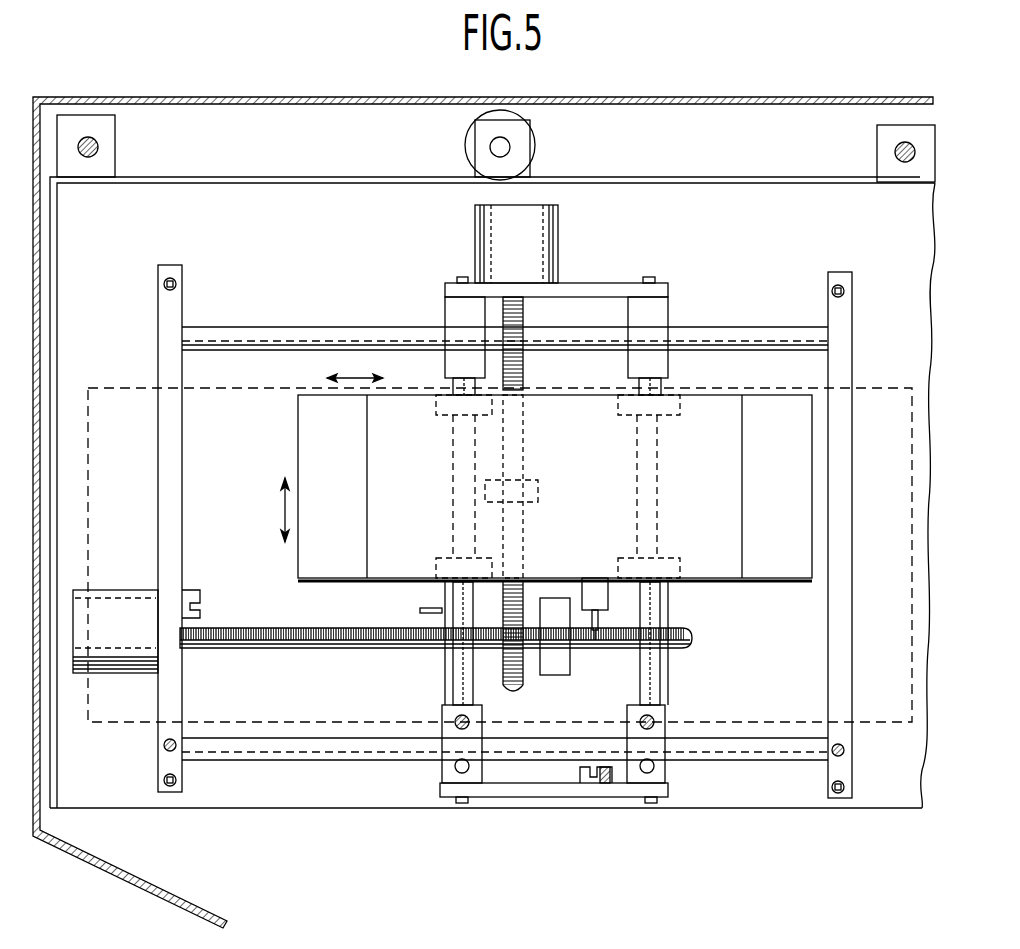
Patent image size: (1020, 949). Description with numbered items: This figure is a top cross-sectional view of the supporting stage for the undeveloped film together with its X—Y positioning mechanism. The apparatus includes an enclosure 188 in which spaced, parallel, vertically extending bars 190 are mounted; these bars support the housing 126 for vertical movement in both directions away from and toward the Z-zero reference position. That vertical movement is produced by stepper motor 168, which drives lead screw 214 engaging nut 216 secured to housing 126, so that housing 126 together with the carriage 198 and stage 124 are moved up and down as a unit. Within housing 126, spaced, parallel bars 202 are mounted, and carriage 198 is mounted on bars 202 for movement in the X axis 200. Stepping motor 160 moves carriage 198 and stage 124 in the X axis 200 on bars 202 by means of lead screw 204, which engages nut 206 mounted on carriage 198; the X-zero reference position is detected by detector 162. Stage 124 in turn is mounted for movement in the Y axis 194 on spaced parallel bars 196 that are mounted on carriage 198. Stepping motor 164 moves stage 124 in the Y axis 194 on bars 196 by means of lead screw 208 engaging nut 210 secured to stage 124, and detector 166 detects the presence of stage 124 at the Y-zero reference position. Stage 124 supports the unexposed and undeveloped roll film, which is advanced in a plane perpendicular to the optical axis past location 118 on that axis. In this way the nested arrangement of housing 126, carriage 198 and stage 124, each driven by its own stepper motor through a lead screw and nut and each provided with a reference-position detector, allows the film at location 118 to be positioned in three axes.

The enclosure 188 is at (246, 97).
The vertically extending bars 190 is at (99, 147).
The nut 216 is at (489, 147).
The stepper motor 168 is at (537, 150).
The lead screw 214 is at (520, 172).
The stepper motor 164 is at (553, 249).
The housing 126 is at (733, 186).
The bars 202 is at (752, 334).
The X axis 200 is at (351, 376).
The lead screw 208 is at (524, 377).
The location 118 is at (505, 498).
The nut 210 is at (540, 488).
The stage 124 is at (430, 481).
The Y axis 194 is at (285, 505).
The stepper motor 160 is at (120, 597).
The detector 162 is at (190, 596).
The lead screw 204 is at (309, 650).
The bars 196 is at (460, 676).
The nut 206 is at (568, 661).
The carriage 198 is at (608, 715).
The detector 166 is at (607, 790).